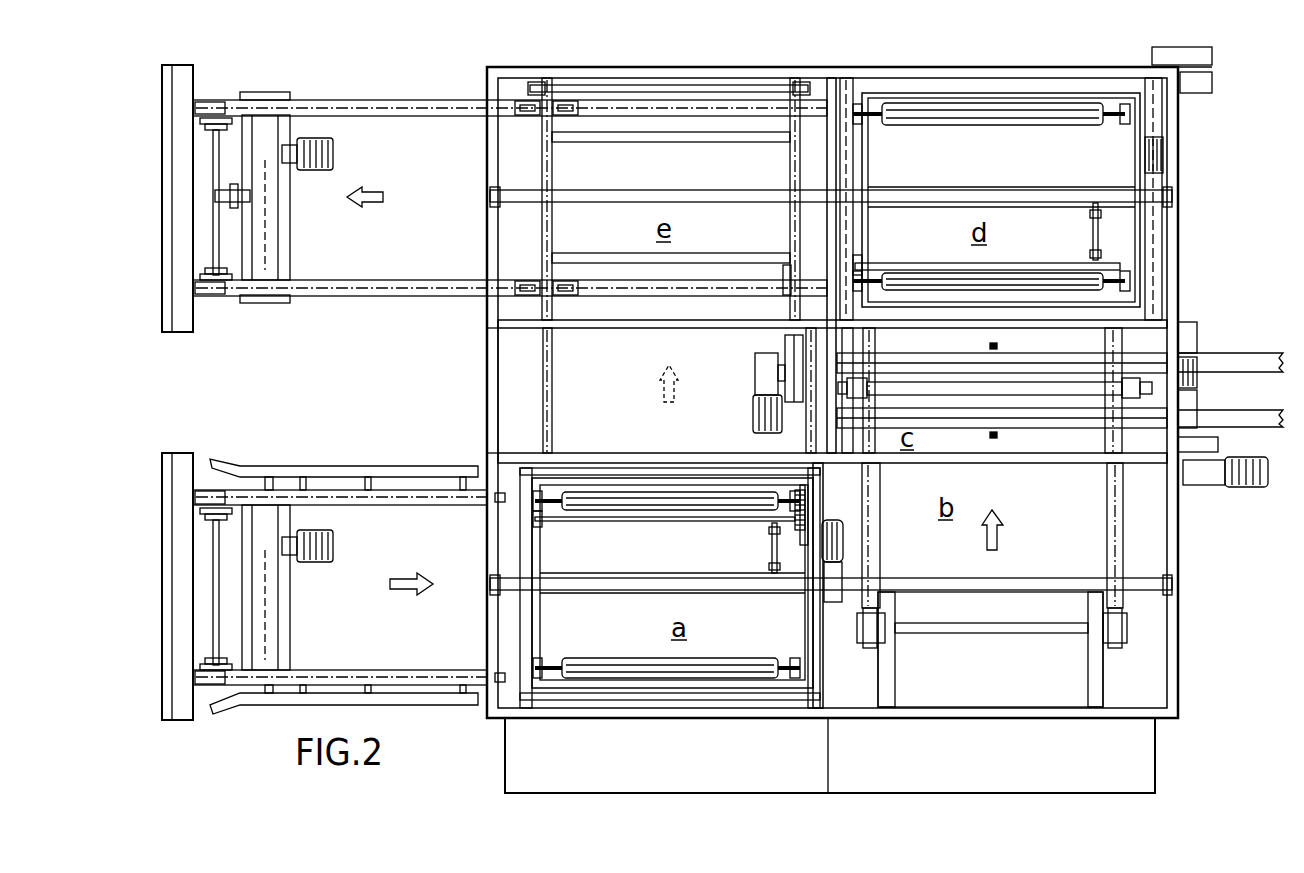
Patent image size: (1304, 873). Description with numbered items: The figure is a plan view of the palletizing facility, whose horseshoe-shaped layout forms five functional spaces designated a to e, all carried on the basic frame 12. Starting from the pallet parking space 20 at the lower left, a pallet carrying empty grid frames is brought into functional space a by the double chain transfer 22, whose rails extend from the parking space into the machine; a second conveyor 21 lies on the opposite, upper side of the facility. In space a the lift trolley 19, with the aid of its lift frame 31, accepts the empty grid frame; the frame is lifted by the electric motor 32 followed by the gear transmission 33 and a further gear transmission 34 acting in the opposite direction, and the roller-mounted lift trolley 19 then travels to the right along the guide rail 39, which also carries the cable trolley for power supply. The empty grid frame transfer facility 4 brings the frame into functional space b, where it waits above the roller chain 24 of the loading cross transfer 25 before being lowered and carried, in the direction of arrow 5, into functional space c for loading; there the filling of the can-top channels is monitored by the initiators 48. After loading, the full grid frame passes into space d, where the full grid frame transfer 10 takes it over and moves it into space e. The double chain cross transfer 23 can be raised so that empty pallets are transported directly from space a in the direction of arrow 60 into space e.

The empty grid frame transfer facility 4 is at (523, 683).
The conveying direction arrow 5 is at (992, 544).
The full grid frame transfer 10 is at (1140, 238).
The basic frame 12 is at (492, 357).
The lift trolley 19 is at (945, 87).
The pallet parking space 20 is at (341, 611).
The discharge conveyor 21 is at (344, 247).
The double chain transfer 22 is at (350, 297).
The double chain cross transfer 23 is at (553, 398).
The roller chain 24 is at (1125, 550).
The loading cross transfer 25 is at (1127, 550).
The lift frame 31 is at (867, 165).
The electric motor 32 is at (848, 545).
The gear transmission 33 is at (810, 496).
The gear transmission 34 is at (775, 527).
The guide rail 39 is at (586, 190).
The initiators 48 is at (1000, 346).
The arrow 60 is at (669, 399).